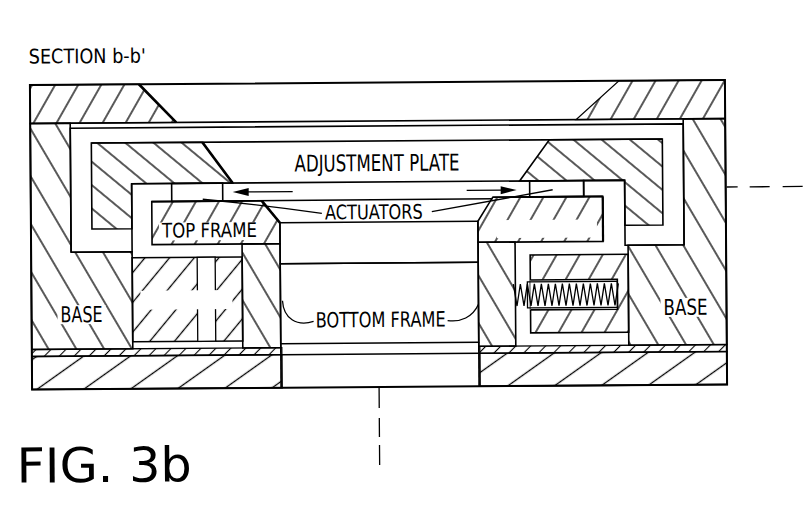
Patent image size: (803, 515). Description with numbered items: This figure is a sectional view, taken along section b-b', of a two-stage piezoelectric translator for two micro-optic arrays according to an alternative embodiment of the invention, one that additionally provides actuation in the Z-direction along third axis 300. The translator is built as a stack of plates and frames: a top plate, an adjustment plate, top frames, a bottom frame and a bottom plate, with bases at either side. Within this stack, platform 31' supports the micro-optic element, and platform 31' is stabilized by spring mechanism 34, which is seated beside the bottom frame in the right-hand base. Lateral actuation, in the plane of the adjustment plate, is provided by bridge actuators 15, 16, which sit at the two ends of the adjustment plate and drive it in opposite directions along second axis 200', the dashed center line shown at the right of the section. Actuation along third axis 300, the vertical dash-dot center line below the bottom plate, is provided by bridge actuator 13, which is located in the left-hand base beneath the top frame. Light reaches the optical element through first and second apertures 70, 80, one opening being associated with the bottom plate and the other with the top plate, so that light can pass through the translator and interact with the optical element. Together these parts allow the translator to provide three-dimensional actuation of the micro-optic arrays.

The second aperture 80 is at (447, 68).
The bridge actuator 15 is at (189, 183).
The bridge actuator 16 is at (563, 182).
The platform 31' is at (624, 219).
The spring mechanism 34 is at (513, 285).
The bridge actuator 13 is at (175, 319).
The first aperture 70 is at (421, 399).
The third axis 300 is at (381, 447).
The second axis 200' is at (764, 154).